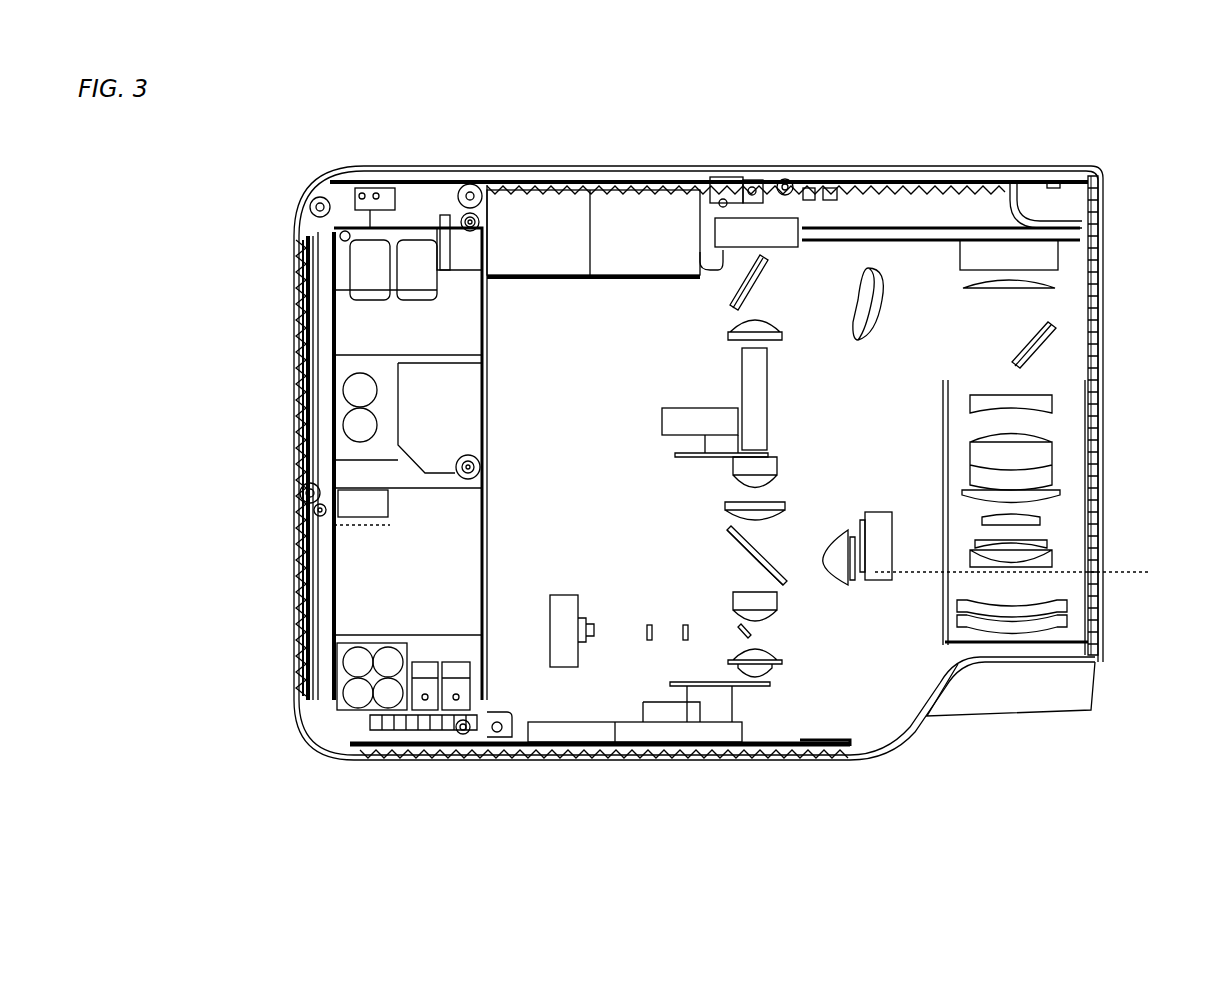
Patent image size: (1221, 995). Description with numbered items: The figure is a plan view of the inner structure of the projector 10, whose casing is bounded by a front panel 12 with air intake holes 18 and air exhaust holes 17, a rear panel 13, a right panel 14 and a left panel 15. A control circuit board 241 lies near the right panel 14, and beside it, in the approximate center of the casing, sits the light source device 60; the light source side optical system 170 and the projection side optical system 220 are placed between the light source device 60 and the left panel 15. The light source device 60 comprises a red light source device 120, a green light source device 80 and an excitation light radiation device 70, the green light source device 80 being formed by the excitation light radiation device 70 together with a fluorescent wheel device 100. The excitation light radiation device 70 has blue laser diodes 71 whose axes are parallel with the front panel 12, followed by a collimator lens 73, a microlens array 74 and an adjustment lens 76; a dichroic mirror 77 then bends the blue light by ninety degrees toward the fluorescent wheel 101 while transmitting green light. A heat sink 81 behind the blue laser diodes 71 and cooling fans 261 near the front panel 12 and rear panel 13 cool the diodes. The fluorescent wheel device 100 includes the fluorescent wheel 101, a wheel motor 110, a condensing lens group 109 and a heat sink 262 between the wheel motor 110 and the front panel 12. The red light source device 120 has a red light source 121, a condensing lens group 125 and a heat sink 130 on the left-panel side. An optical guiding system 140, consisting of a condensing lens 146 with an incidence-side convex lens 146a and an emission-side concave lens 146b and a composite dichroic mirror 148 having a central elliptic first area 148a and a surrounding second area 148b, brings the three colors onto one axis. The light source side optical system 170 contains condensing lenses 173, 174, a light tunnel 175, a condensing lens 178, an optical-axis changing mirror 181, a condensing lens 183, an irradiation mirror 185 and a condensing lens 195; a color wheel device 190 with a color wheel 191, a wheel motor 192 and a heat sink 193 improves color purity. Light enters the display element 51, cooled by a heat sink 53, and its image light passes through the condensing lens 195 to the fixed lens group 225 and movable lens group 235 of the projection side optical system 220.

The projector 10 is at (1113, 154).
The front panel 12 is at (383, 757).
The rear panel 13 is at (585, 190).
The right panel 14 is at (305, 350).
The left panel 15 is at (1098, 606).
The air exhaust holes 17 is at (300, 380).
The air intake holes 18 is at (548, 182).
The display element 51 is at (1045, 270).
The heat sink 53 is at (975, 205).
The light source device 60 is at (562, 430).
The excitation light radiation device 70 is at (429, 718).
The blue laser diodes 71 is at (578, 668).
The collimator lens 73 is at (590, 643).
The microlens array 74 is at (648, 642).
The adjustment lens 76 is at (650, 624).
The dichroic mirror 77 is at (740, 634).
The green light source device 80 is at (497, 719).
The heat sink 81 is at (500, 756).
The fluorescent wheel device 100 is at (773, 690).
The fluorescent wheel 101 is at (712, 703).
The condensing lens group 109 is at (790, 660).
The wheel motor 110 is at (746, 702).
The red light source device 120 is at (887, 582).
The red light source 121 is at (872, 548).
The condensing lens group 125 is at (862, 588).
The heat sink 130 is at (1033, 549).
The optical guiding system 140 is at (822, 742).
The condensing lens 146 is at (685, 624).
The convex lens 146a is at (795, 657).
The concave lens 146b is at (775, 602).
The composite dichroic mirror 148 is at (775, 583).
The first area 148a is at (757, 560).
The second area 148b is at (728, 532).
The light source side optical system 170 is at (797, 305).
The condensing lens 173 is at (776, 508).
The condensing lens 174 is at (770, 468).
The light tunnel 175 is at (764, 404).
The condensing lens 178 is at (730, 335).
The optical-axis changing mirror 181 is at (732, 302).
The condensing lens 183 is at (878, 300).
The irradiation mirror 185 is at (1040, 345).
The color wheel device 190 is at (668, 446).
The color wheel 191 is at (690, 458).
The wheel motor 192 is at (712, 441).
The heat sink 193 is at (665, 420).
The condensing lens 195 is at (1040, 283).
The projection side optical system 220 is at (1060, 468).
The fixed lens group 225 is at (1037, 630).
The movable lens group 235 is at (1060, 427).
The control circuit board 241 is at (334, 525).
The cooling fans 261 is at (507, 230).
The heat sink 262 is at (672, 712).